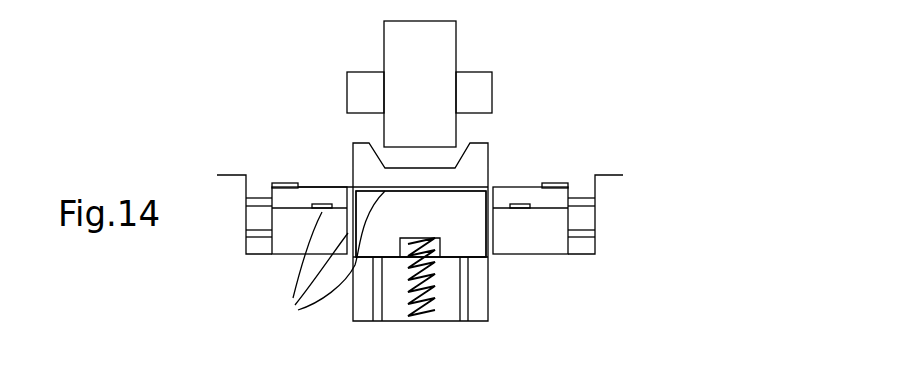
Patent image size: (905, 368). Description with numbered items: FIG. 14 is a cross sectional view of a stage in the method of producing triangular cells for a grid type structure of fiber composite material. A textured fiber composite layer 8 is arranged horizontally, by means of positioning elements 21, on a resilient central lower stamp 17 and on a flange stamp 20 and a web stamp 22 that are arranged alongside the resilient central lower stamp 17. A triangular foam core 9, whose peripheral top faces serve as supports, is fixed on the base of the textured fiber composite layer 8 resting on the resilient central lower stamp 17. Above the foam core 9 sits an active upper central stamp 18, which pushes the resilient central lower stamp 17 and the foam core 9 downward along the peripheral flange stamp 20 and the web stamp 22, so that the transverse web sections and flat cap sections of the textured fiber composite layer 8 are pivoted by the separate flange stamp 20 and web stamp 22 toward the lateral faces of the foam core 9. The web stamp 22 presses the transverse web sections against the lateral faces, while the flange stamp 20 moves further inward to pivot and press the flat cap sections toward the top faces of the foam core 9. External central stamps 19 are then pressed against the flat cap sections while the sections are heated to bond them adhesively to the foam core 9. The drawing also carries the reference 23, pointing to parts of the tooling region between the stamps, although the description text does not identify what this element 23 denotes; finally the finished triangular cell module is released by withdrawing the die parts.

The textured fiber composite layer 8 is at (530, 186).
The triangular foam core 9 is at (488, 160).
The resilient central lower stamp 17 is at (465, 227).
The active upper central stamp 18 is at (432, 45).
The external central stamps 19 is at (472, 88).
The flange stamp 20 is at (325, 189).
The positioning elements 21 is at (280, 183).
The web stamp 22 is at (283, 232).
The connecting lines 23 is at (324, 262).